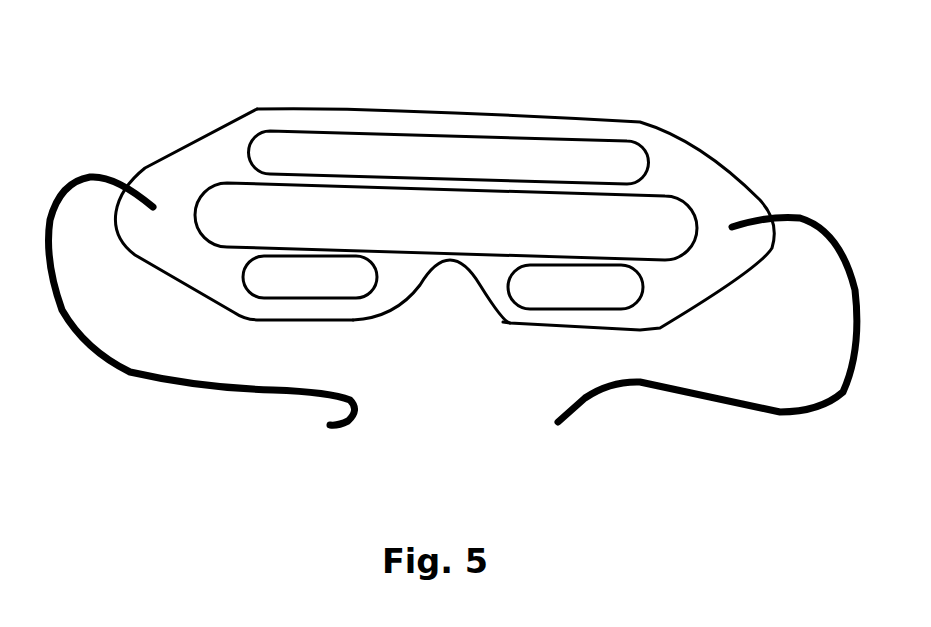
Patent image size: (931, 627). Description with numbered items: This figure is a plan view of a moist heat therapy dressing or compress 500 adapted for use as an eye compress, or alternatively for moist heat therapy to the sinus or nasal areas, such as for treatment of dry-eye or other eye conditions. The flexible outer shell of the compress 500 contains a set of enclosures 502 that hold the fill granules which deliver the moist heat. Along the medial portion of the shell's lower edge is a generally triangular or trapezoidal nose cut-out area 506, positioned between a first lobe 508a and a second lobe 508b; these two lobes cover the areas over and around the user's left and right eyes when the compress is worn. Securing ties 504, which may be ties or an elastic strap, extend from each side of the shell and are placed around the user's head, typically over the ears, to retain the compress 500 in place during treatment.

The dressing or compress 500 is at (476, 82).
The enclosures 502 is at (398, 153).
The securing ties 504 is at (566, 420).
The nose cut-out area 506 is at (447, 299).
The first lobe 508a is at (275, 306).
The second lobe 508b is at (665, 285).